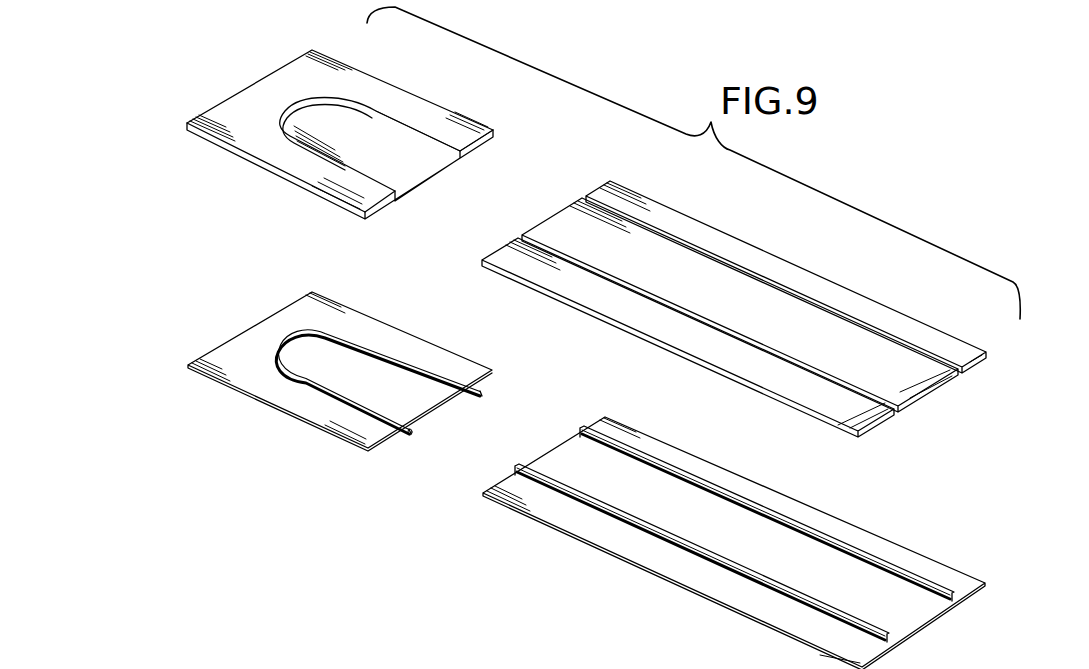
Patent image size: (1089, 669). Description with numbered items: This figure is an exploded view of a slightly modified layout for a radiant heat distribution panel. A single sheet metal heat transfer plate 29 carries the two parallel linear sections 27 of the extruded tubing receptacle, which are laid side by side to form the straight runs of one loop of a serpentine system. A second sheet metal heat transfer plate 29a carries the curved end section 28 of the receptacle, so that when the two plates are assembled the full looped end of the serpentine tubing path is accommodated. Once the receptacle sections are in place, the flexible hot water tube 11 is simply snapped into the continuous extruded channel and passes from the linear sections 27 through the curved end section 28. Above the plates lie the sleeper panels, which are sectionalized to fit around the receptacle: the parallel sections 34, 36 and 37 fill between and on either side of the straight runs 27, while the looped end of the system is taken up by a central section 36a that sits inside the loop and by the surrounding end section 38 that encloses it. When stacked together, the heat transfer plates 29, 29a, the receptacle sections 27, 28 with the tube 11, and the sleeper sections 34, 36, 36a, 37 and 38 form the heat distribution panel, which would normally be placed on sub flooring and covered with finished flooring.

The flexible hot water tube 11 is at (413, 446).
The parallel linear sections 27 is at (757, 512).
The curved end section 28 is at (288, 348).
The heat transfer plate 29 is at (917, 612).
The second sheet metal heat transfer plate 29a is at (307, 412).
The sleeper panel parallel section 34 is at (718, 240).
The sleeper panel parallel section 36 is at (915, 382).
The central section 36a is at (413, 162).
The sleeper panel parallel section 37 is at (672, 333).
The surrounding end section 38 is at (242, 92).